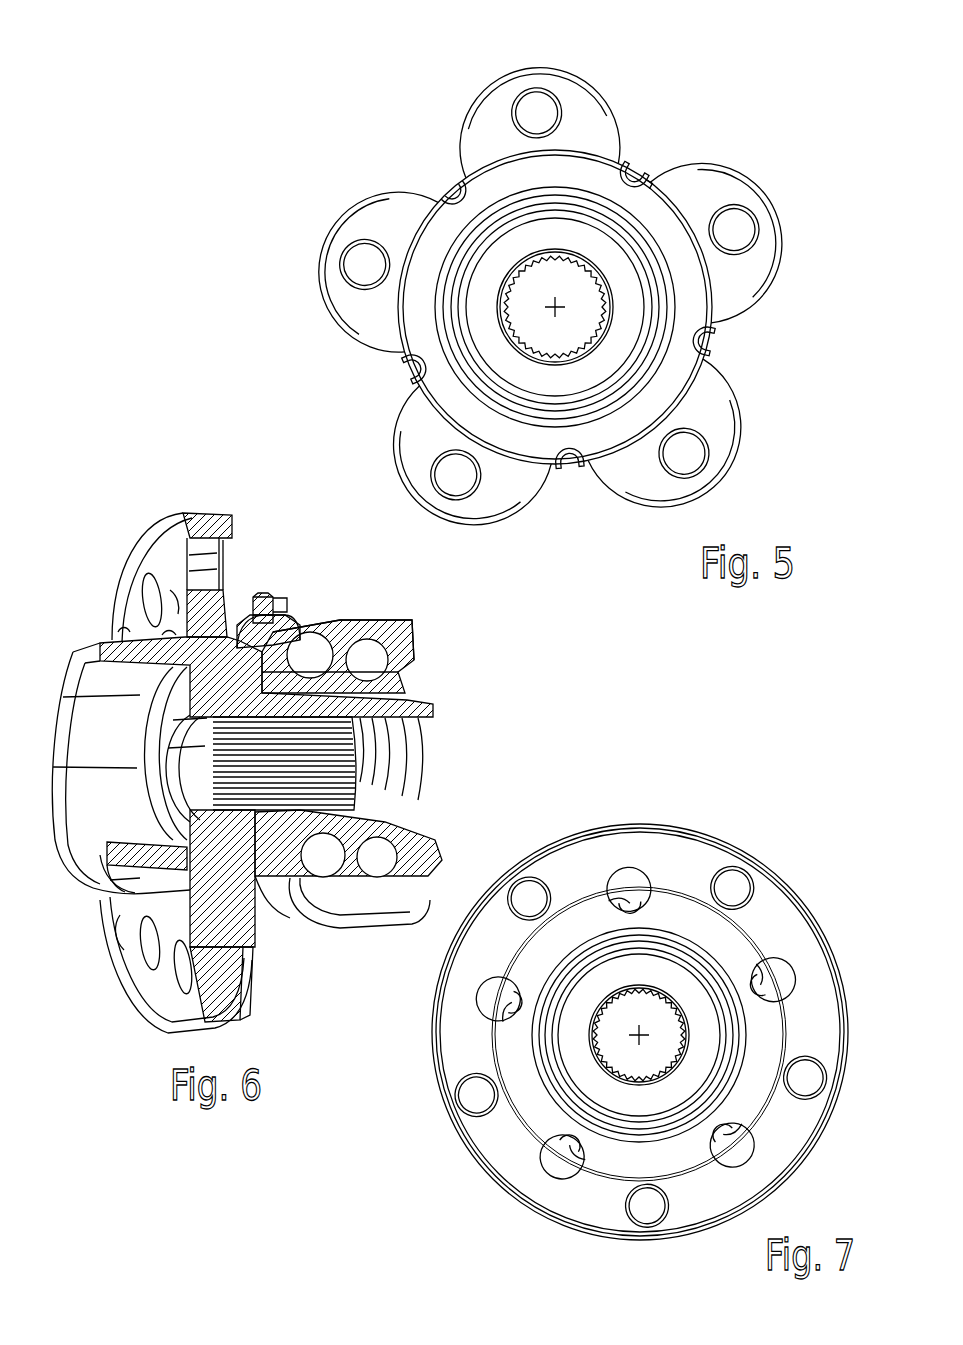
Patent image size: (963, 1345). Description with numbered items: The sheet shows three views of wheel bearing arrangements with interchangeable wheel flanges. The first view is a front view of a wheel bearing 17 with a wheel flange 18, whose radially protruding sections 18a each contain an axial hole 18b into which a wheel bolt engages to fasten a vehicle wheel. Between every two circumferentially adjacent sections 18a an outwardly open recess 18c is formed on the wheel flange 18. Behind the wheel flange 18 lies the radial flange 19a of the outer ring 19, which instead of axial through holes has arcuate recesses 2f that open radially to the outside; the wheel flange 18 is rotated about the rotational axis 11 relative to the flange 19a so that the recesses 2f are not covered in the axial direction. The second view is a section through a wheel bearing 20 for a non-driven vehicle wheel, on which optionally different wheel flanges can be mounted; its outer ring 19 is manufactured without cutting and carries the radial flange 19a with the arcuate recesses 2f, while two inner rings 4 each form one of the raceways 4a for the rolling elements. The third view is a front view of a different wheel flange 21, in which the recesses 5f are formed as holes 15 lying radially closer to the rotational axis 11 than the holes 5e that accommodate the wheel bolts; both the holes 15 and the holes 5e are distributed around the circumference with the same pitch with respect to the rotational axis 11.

In FIG. 5, the wheel bearing 17 is at (702, 103).
In FIG. 5, the wheel flange 18 is at (725, 425).
In FIG. 5, the radially protruding sections 18a is at (590, 120).
In FIG. 5, the axial holes 18b is at (533, 113).
In FIG. 5, the recess 18c is at (440, 175).
In FIG. 5, the arcuate recesses 2f is at (634, 172).
In FIG. 6, the arcuate recesses 2f is at (265, 602).
In FIG. 5, the radial flange 19a is at (660, 190).
In FIG. 6, the radial flange 19a is at (263, 593).
In FIG. 6, the outer ring 19 is at (312, 632).
In FIG. 5, the rotational axis 11 is at (555, 300).
In FIG. 7, the rotational axis 11 is at (640, 1030).
In FIG. 6, the wheel bearing 20 is at (290, 557).
In FIG. 6, the raceways 4a is at (405, 683).
In FIG. 6, the inner rings 4 is at (345, 833).
In FIG. 7, the wheel flange 21 is at (696, 793).
In FIG. 7, the holes 5e is at (530, 890).
In FIG. 7, the recesses 5f is at (628, 880).
In FIG. 7, the holes 15 is at (595, 1000).